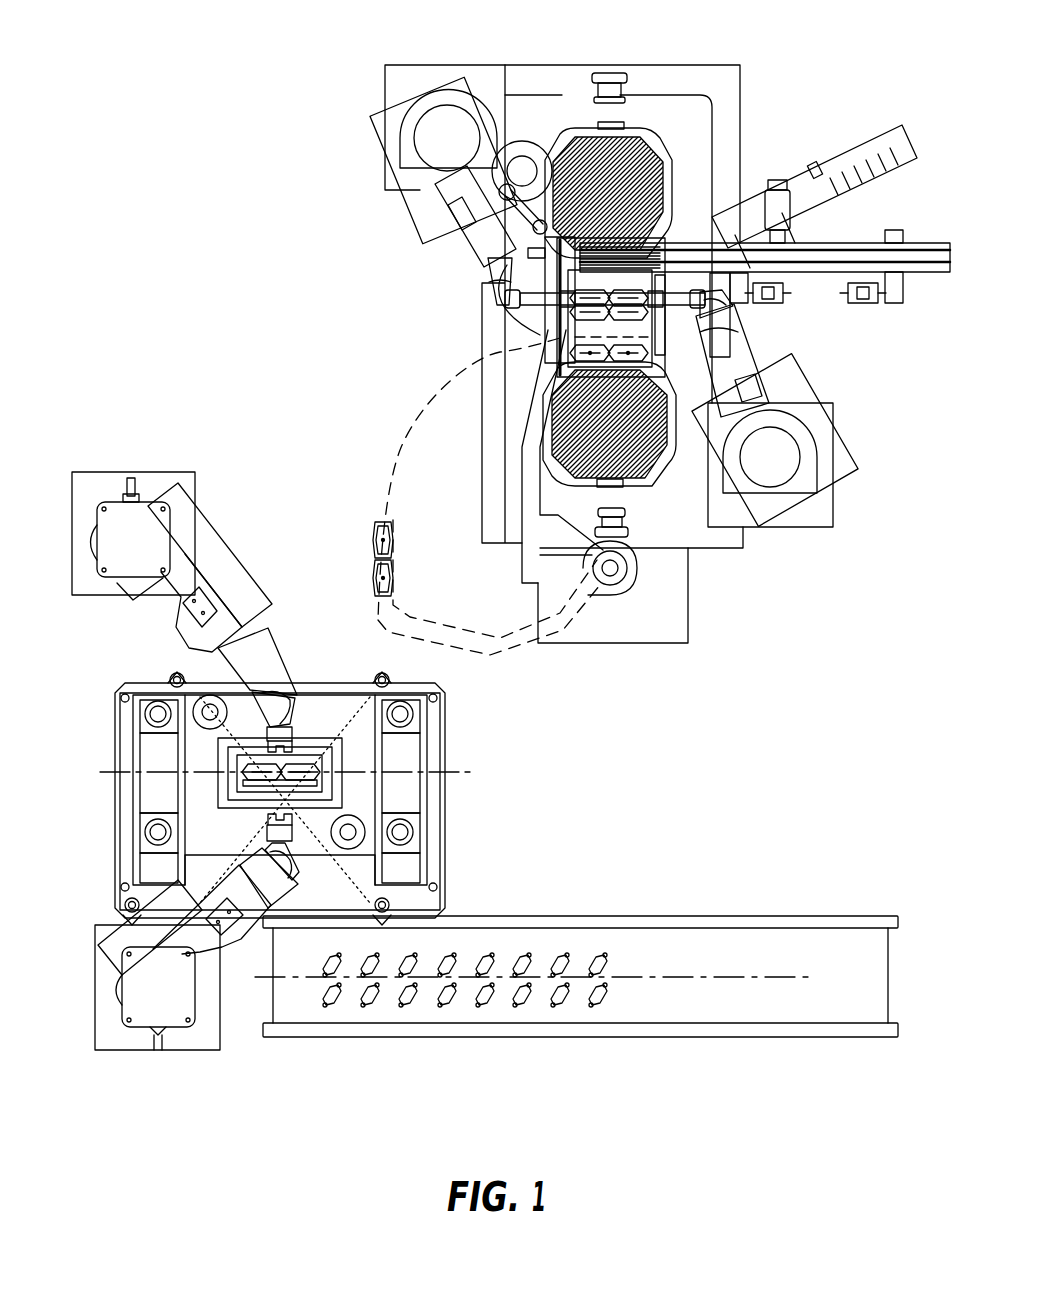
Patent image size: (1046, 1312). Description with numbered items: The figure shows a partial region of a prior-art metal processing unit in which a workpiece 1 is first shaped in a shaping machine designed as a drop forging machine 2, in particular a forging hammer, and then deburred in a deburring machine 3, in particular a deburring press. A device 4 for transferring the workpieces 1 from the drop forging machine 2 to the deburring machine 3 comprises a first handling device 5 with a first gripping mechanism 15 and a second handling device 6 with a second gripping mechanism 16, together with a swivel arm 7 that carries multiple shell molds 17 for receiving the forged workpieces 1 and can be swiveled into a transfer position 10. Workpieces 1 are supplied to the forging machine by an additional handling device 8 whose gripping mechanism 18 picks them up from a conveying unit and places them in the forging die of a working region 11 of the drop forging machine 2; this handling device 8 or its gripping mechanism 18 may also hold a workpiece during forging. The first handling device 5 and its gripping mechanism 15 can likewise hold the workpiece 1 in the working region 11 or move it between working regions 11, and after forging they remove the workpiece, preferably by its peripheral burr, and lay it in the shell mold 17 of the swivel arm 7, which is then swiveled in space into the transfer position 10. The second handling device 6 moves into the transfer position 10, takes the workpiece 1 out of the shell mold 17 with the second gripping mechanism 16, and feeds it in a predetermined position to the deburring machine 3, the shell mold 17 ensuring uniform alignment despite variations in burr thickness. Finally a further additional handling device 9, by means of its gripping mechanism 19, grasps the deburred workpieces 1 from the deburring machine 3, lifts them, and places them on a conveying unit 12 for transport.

The workpiece 1 is at (447, 997).
The drop forging machine 2 is at (557, 60).
The deburring machine 3 is at (108, 796).
The device for transferring workpieces 4 is at (398, 437).
The first handling device 5 is at (445, 122).
The second handling device 6 is at (105, 508).
The swivel arm 7 is at (527, 484).
The additional handling device 8 is at (770, 455).
The additional handling device 9 is at (153, 1000).
The transfer position 10 is at (370, 564).
The working region 11 is at (636, 305).
The conveying unit 12 is at (340, 1013).
The first gripping mechanism 15 is at (541, 299).
The second gripping mechanism 16 is at (295, 726).
The shell mold 17 is at (560, 340).
The gripping mechanism 18 is at (740, 312).
The gripping mechanism 19 is at (290, 850).